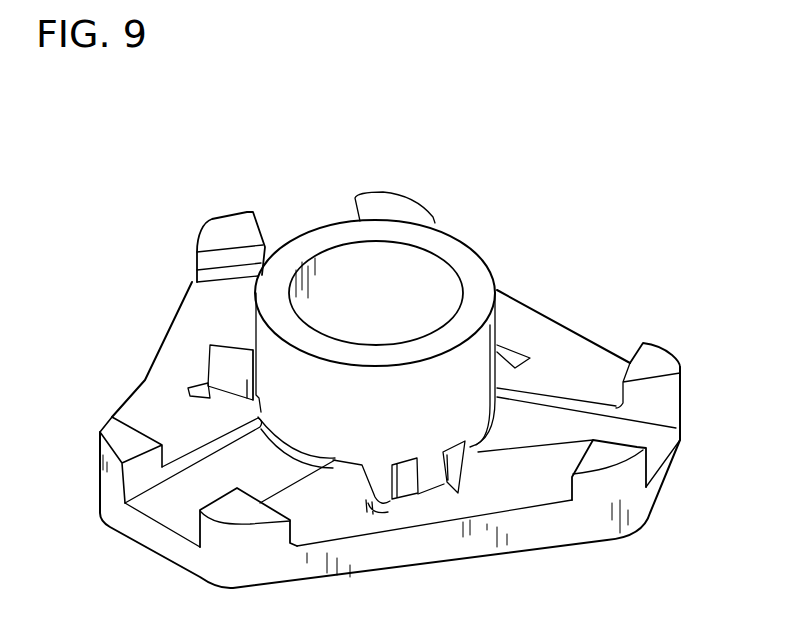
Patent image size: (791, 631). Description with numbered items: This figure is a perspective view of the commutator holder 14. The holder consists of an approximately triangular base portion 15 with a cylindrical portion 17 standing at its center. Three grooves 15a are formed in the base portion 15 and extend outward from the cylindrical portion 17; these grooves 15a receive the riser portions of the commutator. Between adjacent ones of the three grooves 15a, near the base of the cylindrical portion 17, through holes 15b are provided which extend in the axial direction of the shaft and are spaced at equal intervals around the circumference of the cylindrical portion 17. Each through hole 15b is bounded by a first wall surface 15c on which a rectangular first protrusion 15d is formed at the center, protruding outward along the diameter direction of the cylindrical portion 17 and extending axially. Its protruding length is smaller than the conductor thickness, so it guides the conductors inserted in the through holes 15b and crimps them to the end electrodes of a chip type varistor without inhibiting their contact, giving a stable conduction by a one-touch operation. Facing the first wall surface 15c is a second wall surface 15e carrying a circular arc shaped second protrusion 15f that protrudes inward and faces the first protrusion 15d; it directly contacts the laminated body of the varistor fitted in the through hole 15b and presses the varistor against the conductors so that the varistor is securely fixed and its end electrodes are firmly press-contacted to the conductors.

The commutator holder 14 is at (381, 149).
The base portion 15 is at (549, 310).
The grooves 15a is at (266, 247).
The through holes 15b is at (223, 365).
The first wall surface 15c is at (382, 480).
The first protrusion 15d is at (258, 398).
The second wall surface 15e is at (368, 503).
The second protrusion 15f is at (205, 390).
The cylindrical portion 17 is at (468, 263).